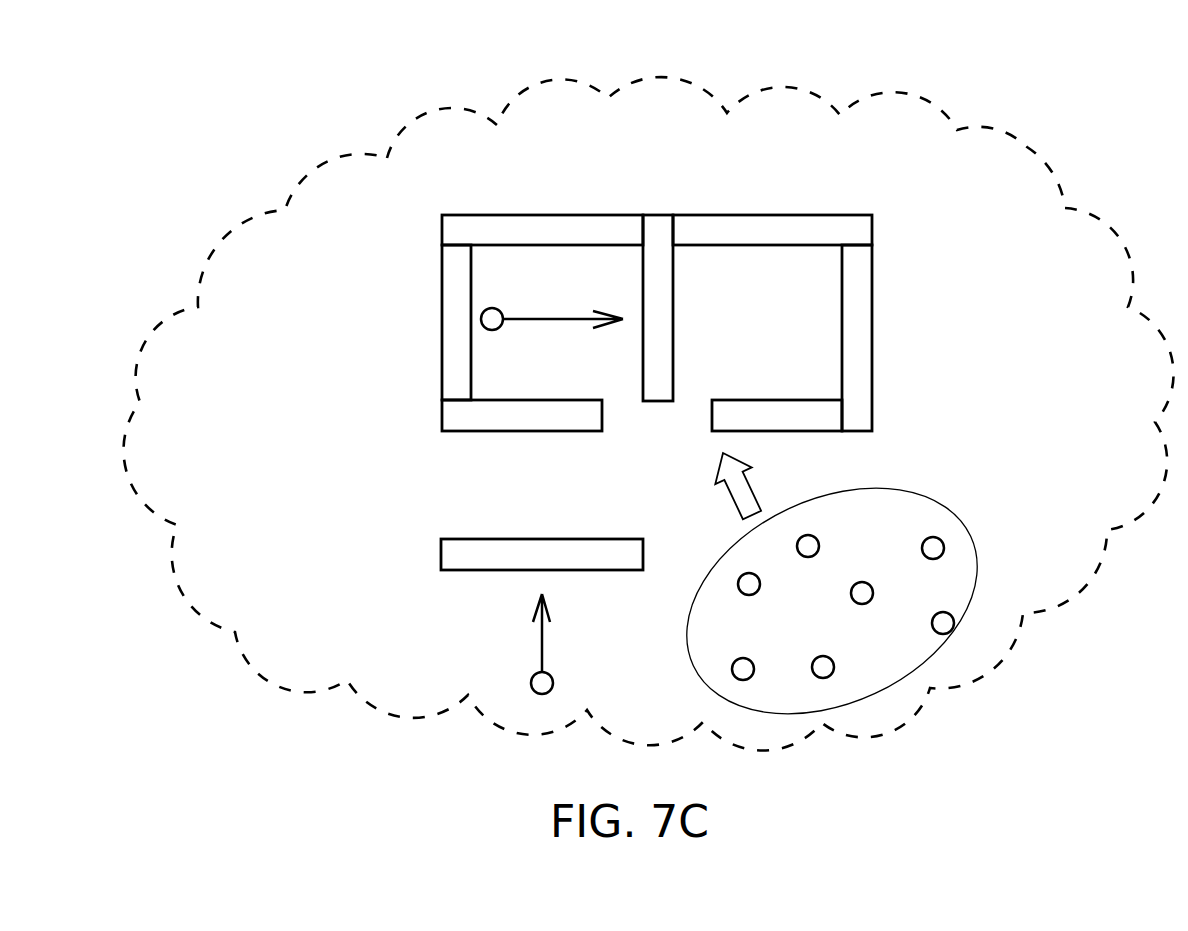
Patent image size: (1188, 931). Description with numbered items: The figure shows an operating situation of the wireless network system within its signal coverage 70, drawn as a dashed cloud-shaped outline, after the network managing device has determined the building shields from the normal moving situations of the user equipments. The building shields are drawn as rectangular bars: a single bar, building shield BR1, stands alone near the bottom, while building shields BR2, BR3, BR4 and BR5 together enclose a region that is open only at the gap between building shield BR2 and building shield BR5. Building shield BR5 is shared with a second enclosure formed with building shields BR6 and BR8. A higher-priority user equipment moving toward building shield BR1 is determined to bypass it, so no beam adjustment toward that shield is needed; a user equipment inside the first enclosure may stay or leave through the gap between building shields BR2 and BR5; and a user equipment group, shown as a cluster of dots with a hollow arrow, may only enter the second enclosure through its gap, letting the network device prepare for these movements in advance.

The signal coverage 70 is at (1028, 145).
The building shield BR1 is at (457, 553).
The building shield BR2 is at (472, 422).
The building shield BR3 is at (455, 321).
The building shield BR4 is at (458, 230).
The building shield BR5 is at (653, 230).
The building shield BR6 is at (742, 230).
The building shield BR8 is at (790, 420).